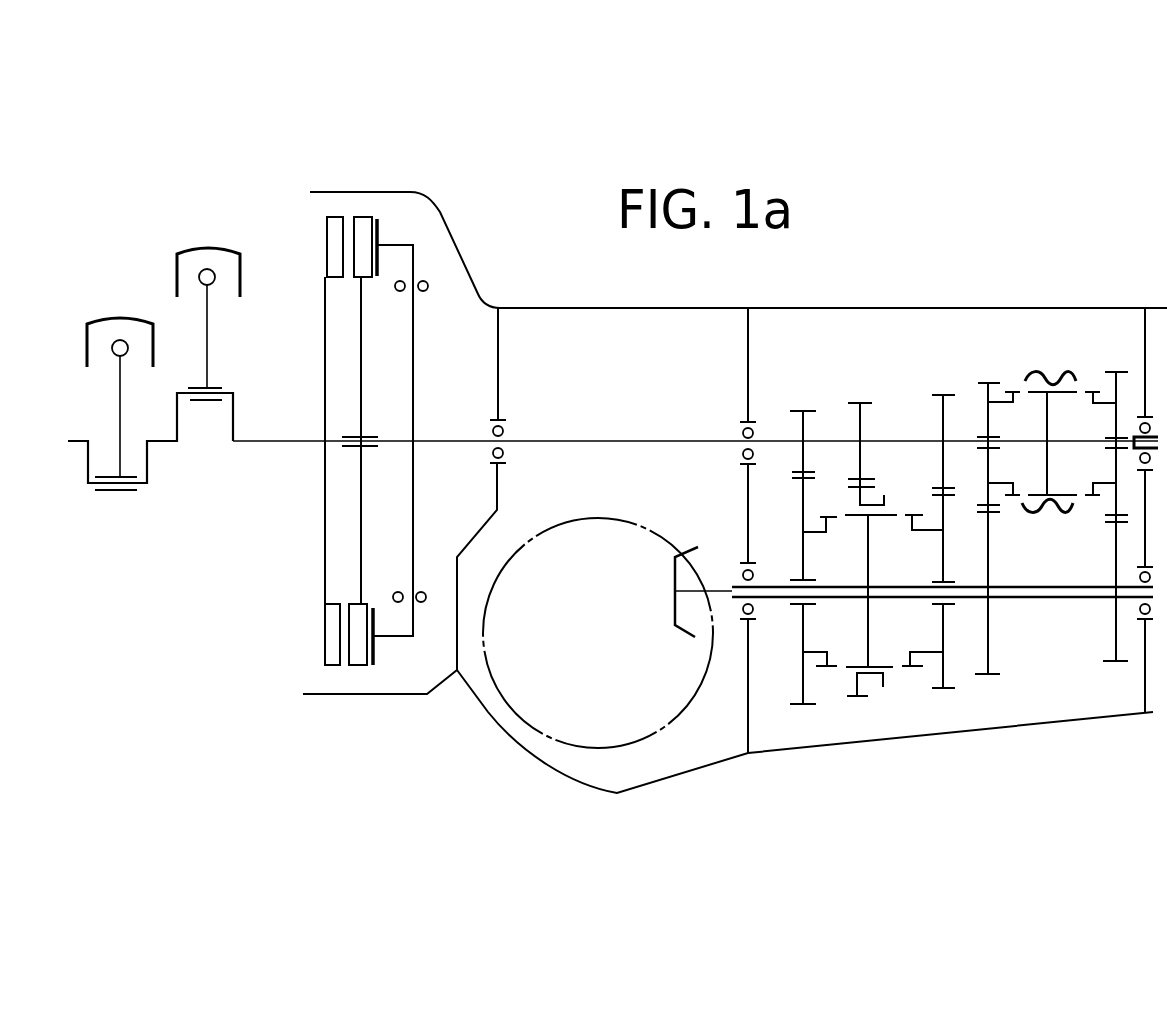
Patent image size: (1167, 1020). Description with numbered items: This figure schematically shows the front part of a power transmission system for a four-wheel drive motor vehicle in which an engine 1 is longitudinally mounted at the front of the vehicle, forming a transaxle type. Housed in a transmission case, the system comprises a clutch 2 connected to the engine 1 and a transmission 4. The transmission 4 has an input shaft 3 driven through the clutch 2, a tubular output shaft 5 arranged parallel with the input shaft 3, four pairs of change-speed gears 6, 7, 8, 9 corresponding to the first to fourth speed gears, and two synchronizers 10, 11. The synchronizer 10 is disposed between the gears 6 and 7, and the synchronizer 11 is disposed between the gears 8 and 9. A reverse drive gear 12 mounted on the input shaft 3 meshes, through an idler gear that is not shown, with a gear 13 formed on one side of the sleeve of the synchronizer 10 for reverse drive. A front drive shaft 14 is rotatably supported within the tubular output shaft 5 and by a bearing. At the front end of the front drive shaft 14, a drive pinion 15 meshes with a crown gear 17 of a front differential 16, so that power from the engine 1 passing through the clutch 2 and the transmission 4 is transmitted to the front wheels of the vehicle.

The engine 1 is at (150, 284).
The clutch 2 is at (362, 216).
The input shaft 3 is at (626, 438).
The transmission 4 is at (945, 530).
The tubular output shaft 5 is at (1078, 602).
The change-speed gear 6 is at (802, 404).
The change-speed gear 7 is at (940, 396).
The change-speed gear 8 is at (985, 383).
The change-speed gear 9 is at (1135, 347).
The synchronizer 10 is at (884, 700).
The synchronizer 11 is at (1049, 360).
The reverse drive gear 12 is at (862, 396).
The gear 13 is at (863, 698).
The front drive shaft 14 is at (1037, 601).
The drive pinion 15 is at (687, 633).
The front differential 16 is at (690, 727).
The crown gear 17 is at (517, 720).